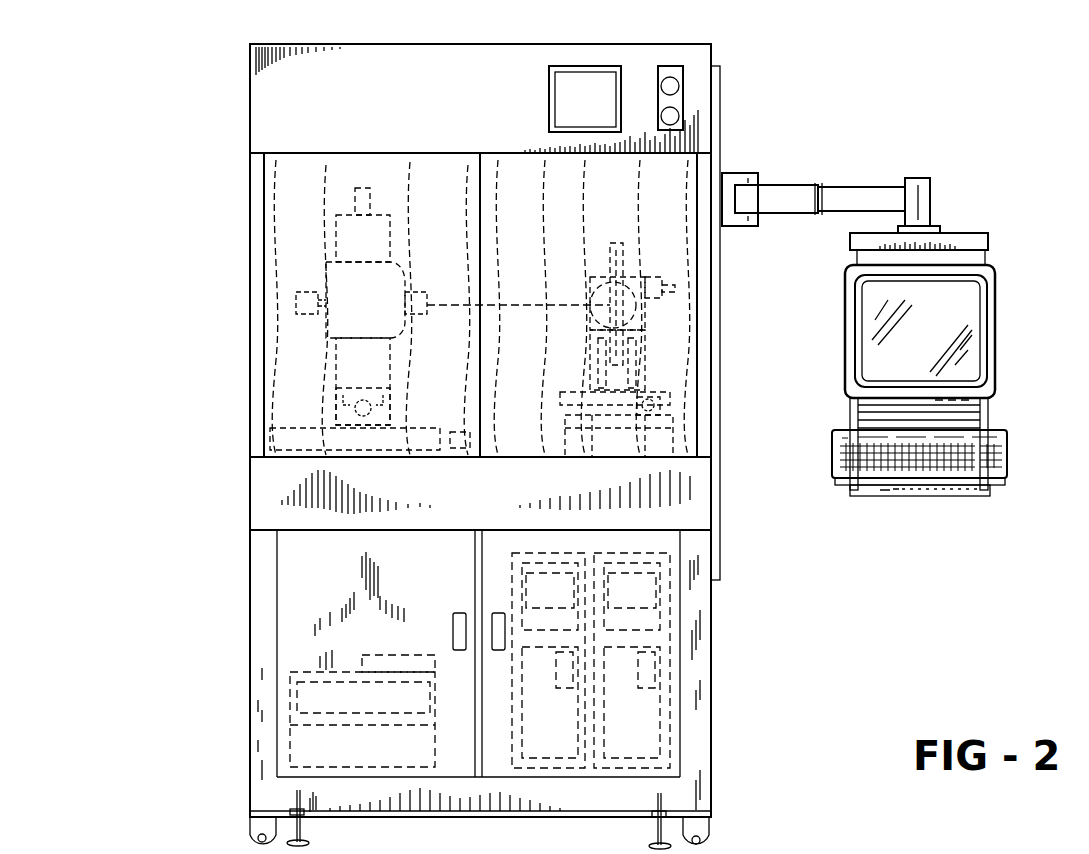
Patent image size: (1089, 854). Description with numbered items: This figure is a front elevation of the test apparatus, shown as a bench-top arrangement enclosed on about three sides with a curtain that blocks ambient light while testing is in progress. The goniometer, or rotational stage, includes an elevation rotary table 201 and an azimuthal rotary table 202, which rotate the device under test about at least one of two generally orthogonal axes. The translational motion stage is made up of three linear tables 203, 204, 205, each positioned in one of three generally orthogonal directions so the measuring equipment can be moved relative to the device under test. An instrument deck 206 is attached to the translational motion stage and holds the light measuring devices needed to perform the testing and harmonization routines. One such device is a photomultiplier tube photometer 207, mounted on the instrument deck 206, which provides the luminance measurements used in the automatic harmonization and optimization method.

The elevation rotary table 201 is at (668, 406).
The azimuthal rotary table 202 is at (657, 297).
The linear table 203 is at (279, 292).
The linear table 204 is at (310, 233).
The linear table 205 is at (415, 268).
The instrument deck 206 is at (348, 308).
The photomultiplier tube (PMT) photometer 207 is at (413, 323).